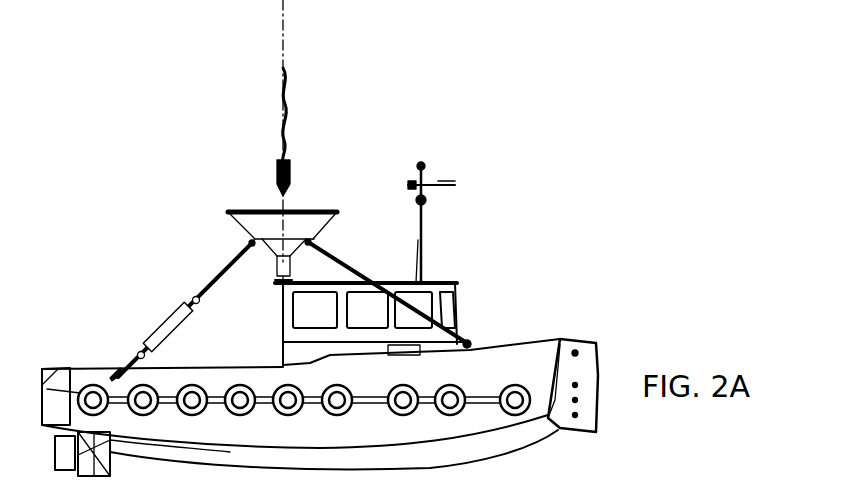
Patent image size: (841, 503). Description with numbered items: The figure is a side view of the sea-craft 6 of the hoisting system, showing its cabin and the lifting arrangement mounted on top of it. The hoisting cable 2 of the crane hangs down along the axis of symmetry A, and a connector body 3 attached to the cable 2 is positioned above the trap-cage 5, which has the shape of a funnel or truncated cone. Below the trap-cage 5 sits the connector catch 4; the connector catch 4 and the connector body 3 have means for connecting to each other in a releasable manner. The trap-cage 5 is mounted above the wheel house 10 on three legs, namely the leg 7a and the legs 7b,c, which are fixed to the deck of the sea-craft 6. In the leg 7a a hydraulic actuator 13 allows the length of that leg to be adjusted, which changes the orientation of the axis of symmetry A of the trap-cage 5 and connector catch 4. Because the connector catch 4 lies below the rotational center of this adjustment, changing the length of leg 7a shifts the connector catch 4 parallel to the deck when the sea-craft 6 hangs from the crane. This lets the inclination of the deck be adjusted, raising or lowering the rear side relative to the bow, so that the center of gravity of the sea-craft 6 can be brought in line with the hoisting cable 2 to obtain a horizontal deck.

The axis of symmetry A is at (294, 131).
The hoisting cable 2 is at (289, 128).
The connector body 3 is at (291, 179).
The connector catch 4 is at (276, 266).
The trap-cage 5 is at (262, 230).
The sea-craft 6 is at (537, 345).
The leg 7a is at (133, 350).
The legs 7b,c is at (350, 264).
The wheel house 10 is at (458, 283).
The hydraulic actuator 13 is at (167, 319).